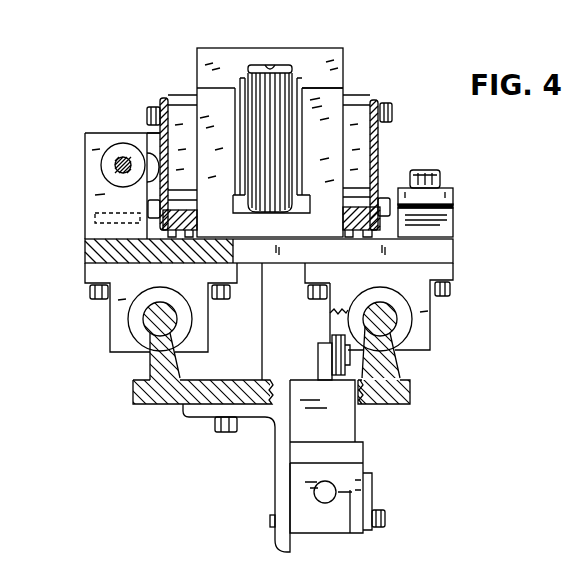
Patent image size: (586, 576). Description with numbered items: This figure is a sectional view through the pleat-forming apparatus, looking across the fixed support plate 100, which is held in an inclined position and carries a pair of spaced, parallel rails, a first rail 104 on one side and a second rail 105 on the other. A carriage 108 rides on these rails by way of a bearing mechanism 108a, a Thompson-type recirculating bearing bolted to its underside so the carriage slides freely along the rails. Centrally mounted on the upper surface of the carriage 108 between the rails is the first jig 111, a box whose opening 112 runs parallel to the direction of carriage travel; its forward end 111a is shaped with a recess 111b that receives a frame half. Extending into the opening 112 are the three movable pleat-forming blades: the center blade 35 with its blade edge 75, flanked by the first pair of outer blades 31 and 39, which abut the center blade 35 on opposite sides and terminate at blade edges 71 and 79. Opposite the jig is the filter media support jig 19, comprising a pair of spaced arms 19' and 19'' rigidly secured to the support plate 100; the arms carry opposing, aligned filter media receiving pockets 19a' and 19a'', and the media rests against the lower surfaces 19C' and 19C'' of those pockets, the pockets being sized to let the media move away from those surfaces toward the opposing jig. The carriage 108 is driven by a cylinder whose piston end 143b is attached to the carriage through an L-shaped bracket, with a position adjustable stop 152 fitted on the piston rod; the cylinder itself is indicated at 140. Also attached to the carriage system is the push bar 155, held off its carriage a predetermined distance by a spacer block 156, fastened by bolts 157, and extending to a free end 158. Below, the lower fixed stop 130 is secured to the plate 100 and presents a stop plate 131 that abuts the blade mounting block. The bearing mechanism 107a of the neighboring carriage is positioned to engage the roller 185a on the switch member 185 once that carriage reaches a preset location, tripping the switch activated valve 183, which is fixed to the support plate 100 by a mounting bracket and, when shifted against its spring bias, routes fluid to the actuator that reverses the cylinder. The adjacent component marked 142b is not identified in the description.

The first jig 111 is at (346, 54).
The forward end of jig 111a is at (327, 97).
The recess 111b is at (242, 108).
The outer pleat forming blade 39 is at (249, 65).
The opening 112 is at (271, 65).
The outer pleat forming blade 31 is at (293, 66).
The blade edge 79 is at (257, 168).
The blade edge 75 is at (270, 155).
The blade edge 71 is at (285, 165).
The center pleat forming blade 35 is at (270, 200).
The arm 19'' is at (141, 149).
The filter media material receiving pocket 19a'' is at (165, 119).
The fastener 140 is at (143, 130).
The filter media support jig 19 is at (400, 150).
The filter media material receiving pocket 19a' is at (395, 121).
The arm 19' is at (289, 160).
The lower surface 19C'' is at (200, 218).
The lower surface 19C' is at (341, 217).
The position adjustable stop 152 is at (100, 200).
The piston end 143b is at (121, 168).
The pin 142b is at (116, 167).
The bolts 157 is at (440, 176).
The free end 158 is at (440, 192).
The push bar 155 is at (454, 206).
The spacer block 156 is at (432, 222).
The carriage 108 is at (92, 253).
The bearing mechanism 108a is at (109, 327).
The stop plate 131 is at (266, 298).
The lower fixed stop 130 is at (262, 322).
The bearing mechanism 107a is at (338, 314).
The roller 185a is at (333, 338).
The switch member 185 is at (318, 356).
The second rail 105 is at (148, 359).
The first rail 104 is at (395, 358).
The support plate 100 is at (131, 405).
The switch activated valve 183 is at (366, 457).